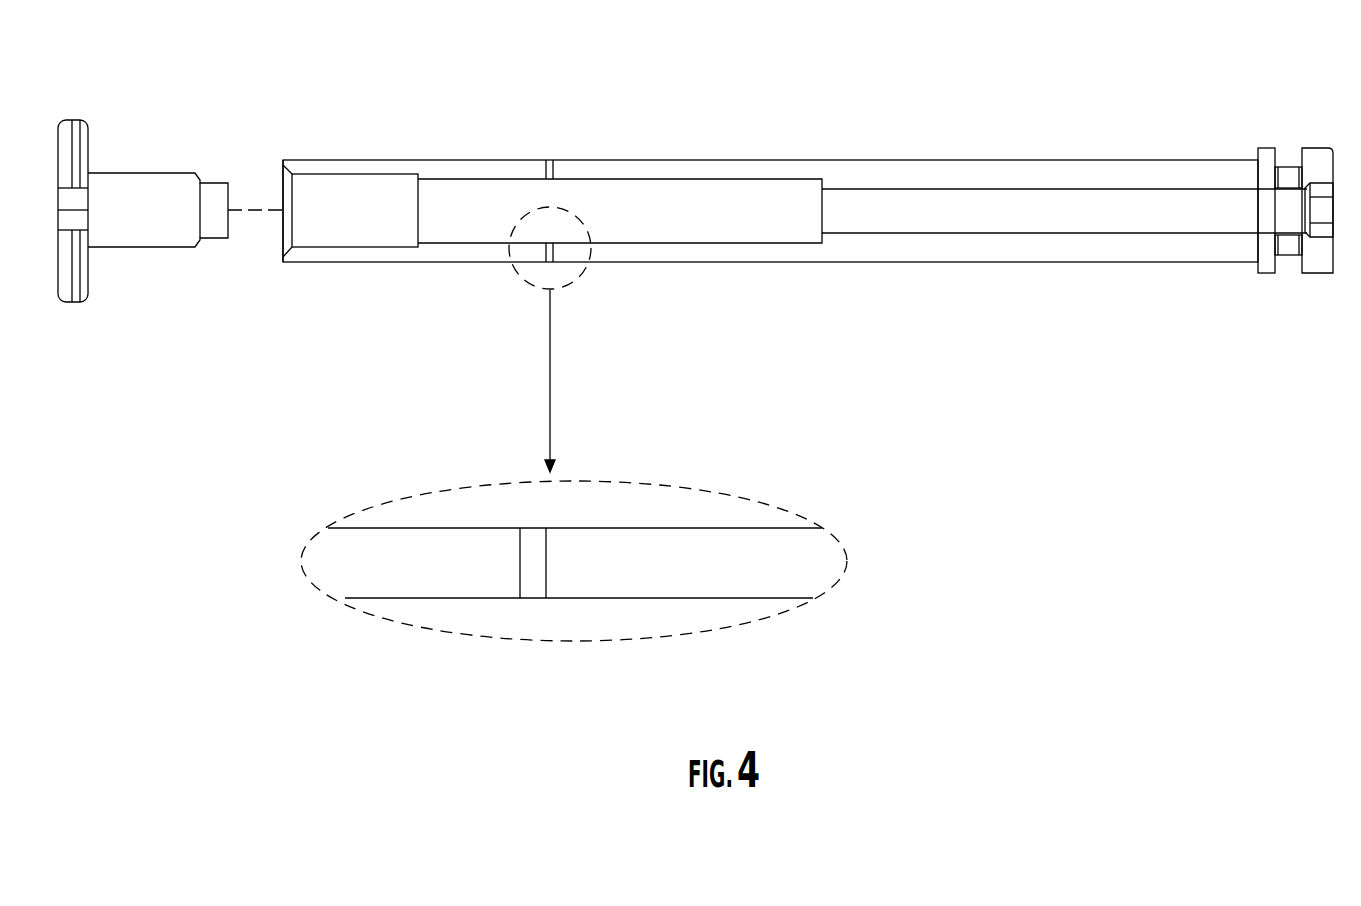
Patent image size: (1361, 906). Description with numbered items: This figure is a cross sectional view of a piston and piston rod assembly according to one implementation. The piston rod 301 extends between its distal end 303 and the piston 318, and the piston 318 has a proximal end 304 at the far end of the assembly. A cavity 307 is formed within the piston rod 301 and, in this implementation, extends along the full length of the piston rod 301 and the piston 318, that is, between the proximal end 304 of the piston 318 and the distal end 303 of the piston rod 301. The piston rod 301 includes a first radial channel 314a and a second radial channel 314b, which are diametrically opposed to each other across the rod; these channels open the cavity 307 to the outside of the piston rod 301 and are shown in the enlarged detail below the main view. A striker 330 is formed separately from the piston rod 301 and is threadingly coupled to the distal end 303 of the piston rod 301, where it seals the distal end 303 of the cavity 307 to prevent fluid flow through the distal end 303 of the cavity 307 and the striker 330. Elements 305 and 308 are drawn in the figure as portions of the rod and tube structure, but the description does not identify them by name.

The piston rod 301 is at (505, 158).
The distal end of the piston rod 303 is at (283, 263).
The proximal end of the piston 304 is at (1333, 152).
The rod 305 is at (942, 262).
The cavity 307 is at (358, 212).
The inner tube 308 is at (790, 179).
The first radial channel 314a is at (560, 250).
The second radial channel 314b is at (553, 172).
The piston 318 is at (1320, 274).
The striker 330 is at (126, 199).